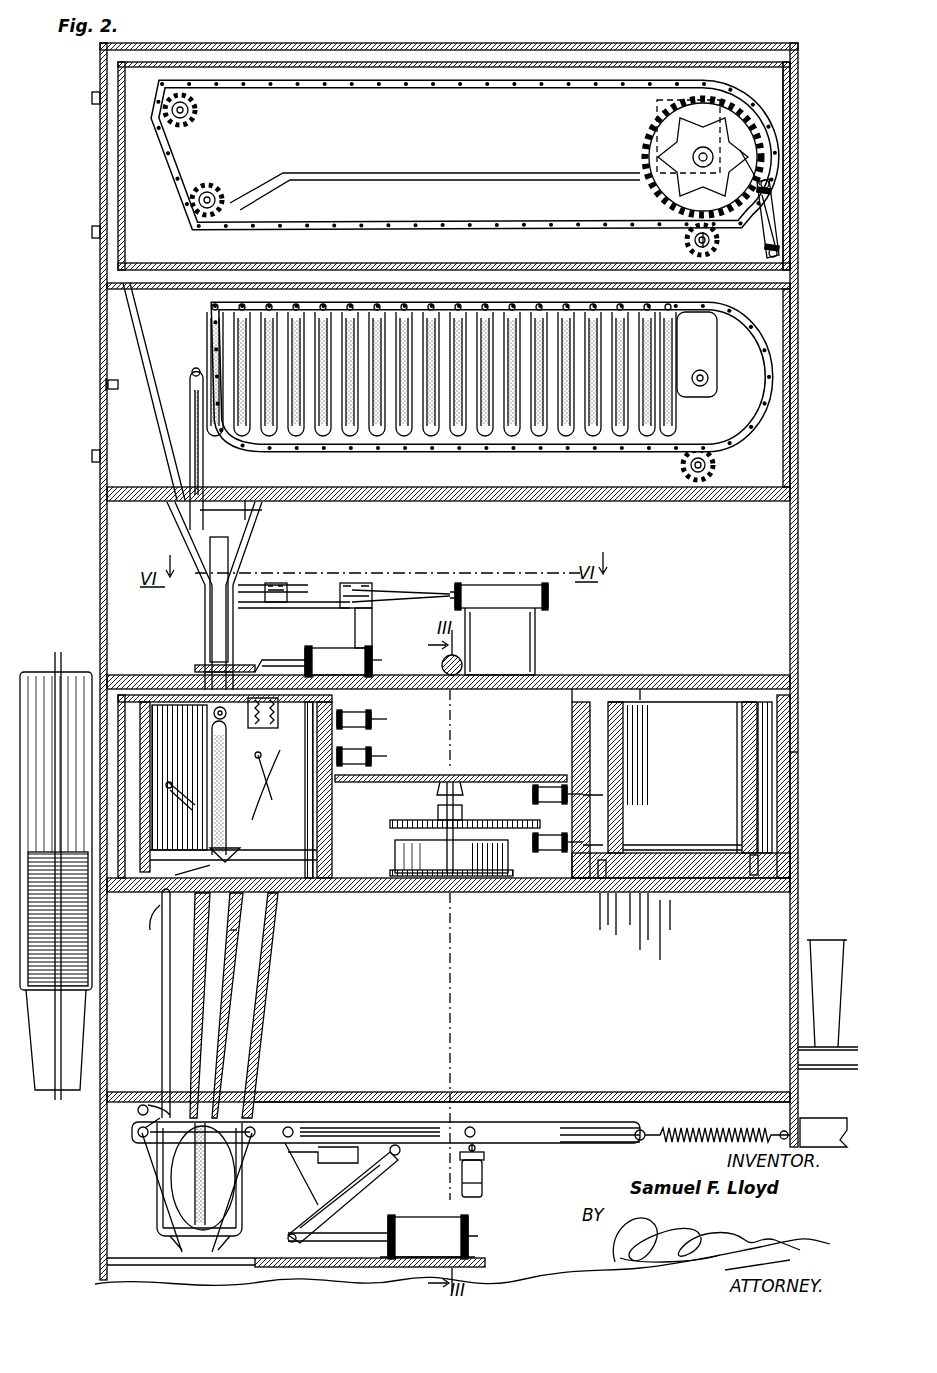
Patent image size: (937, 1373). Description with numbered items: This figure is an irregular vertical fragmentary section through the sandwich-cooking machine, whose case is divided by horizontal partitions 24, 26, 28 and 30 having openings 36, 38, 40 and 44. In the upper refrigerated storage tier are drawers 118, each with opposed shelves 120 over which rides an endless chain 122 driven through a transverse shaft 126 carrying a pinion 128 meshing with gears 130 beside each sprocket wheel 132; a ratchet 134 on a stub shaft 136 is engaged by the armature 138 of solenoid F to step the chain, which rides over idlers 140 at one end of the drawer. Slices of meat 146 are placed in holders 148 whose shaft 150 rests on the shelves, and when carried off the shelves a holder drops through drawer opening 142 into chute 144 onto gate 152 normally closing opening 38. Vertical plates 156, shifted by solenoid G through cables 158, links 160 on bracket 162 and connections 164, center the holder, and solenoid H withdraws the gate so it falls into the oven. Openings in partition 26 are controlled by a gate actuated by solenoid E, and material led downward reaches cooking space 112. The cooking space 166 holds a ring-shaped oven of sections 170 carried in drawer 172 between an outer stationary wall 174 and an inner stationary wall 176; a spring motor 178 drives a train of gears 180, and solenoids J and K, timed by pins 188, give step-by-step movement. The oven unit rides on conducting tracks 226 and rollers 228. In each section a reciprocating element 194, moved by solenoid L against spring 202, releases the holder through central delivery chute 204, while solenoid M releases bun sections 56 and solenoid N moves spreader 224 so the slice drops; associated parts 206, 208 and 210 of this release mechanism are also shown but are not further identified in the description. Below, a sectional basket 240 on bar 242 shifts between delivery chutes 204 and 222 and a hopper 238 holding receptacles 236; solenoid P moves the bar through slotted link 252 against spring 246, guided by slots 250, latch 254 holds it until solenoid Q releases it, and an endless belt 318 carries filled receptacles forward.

The horizontal partition 24 is at (150, 497).
The horizontal partition 26 is at (640, 680).
The horizontal partition 28 is at (470, 893).
The horizontal partition 30 is at (652, 1098).
The opening 36 is at (265, 518).
The opening 38 is at (175, 673).
The opening 40 is at (221, 1005).
The opening 44 is at (286, 1237).
The bun sections 56 is at (210, 1208).
The cooking space 112 is at (477, 945).
The drawer 118 is at (792, 96).
The shelves 120 is at (447, 168).
The endless chain 122 is at (527, 226).
The transverse shaft 126 is at (690, 240).
The pinion 128 is at (715, 240).
The gear 130 is at (655, 180).
The sprocket wheel 132 is at (648, 145).
The ratchet 134 is at (740, 158).
The stub shaft 136 is at (703, 150).
The armature 138 is at (775, 187).
The idlers 140 is at (200, 185).
The opening 142 is at (252, 500).
The chute 144 is at (188, 548).
The slice of meat 146 is at (192, 405).
The holder 148 is at (206, 472).
The shaft 150 is at (196, 368).
The gate 152 is at (248, 665).
The vertical plates 156 is at (219, 537).
The cables 158 is at (412, 588).
The links 160 is at (305, 585).
The bracket 162 is at (372, 626).
The connections 164 is at (265, 585).
The cooking space 166 is at (702, 688).
The oven section 170 is at (140, 673).
The drawer 172 is at (797, 752).
The outer stationary wall 174 is at (750, 690).
The inner stationary wall 176 is at (580, 690).
The spring motor 178 is at (425, 840).
The train of gears 180 is at (490, 820).
The pins 188 is at (600, 795).
The reciprocating element 194 is at (268, 690).
The spring 202 is at (268, 728).
The central delivery chute 204 is at (215, 972).
The link 206 is at (180, 805).
The link 208 is at (270, 800).
The link 210 is at (268, 780).
The delivery chute 222 is at (182, 1053).
The spreader 224 is at (240, 850).
The tracks 226 is at (722, 903).
The rollers 228 is at (615, 852).
The receptacle 236 is at (822, 955).
The hopper 238 is at (42, 665).
The sectional basket 240 is at (158, 1222).
The bar 242 is at (140, 1130).
The spring 246 is at (715, 1133).
The slots 250 is at (385, 1120).
The slotted link 252 is at (362, 1182).
The latch 254 is at (486, 1160).
The endless belt 318 is at (822, 1069).
The solenoid E is at (441, 665).
The solenoid F is at (786, 215).
The solenoid G is at (502, 585).
The solenoid H is at (340, 648).
The solenoid J is at (540, 787).
The solenoid K is at (548, 835).
The solenoid L is at (375, 714).
The solenoid M is at (375, 745).
The solenoid N is at (242, 940).
The solenoid P is at (429, 1237).
The solenoid Q is at (484, 1182).